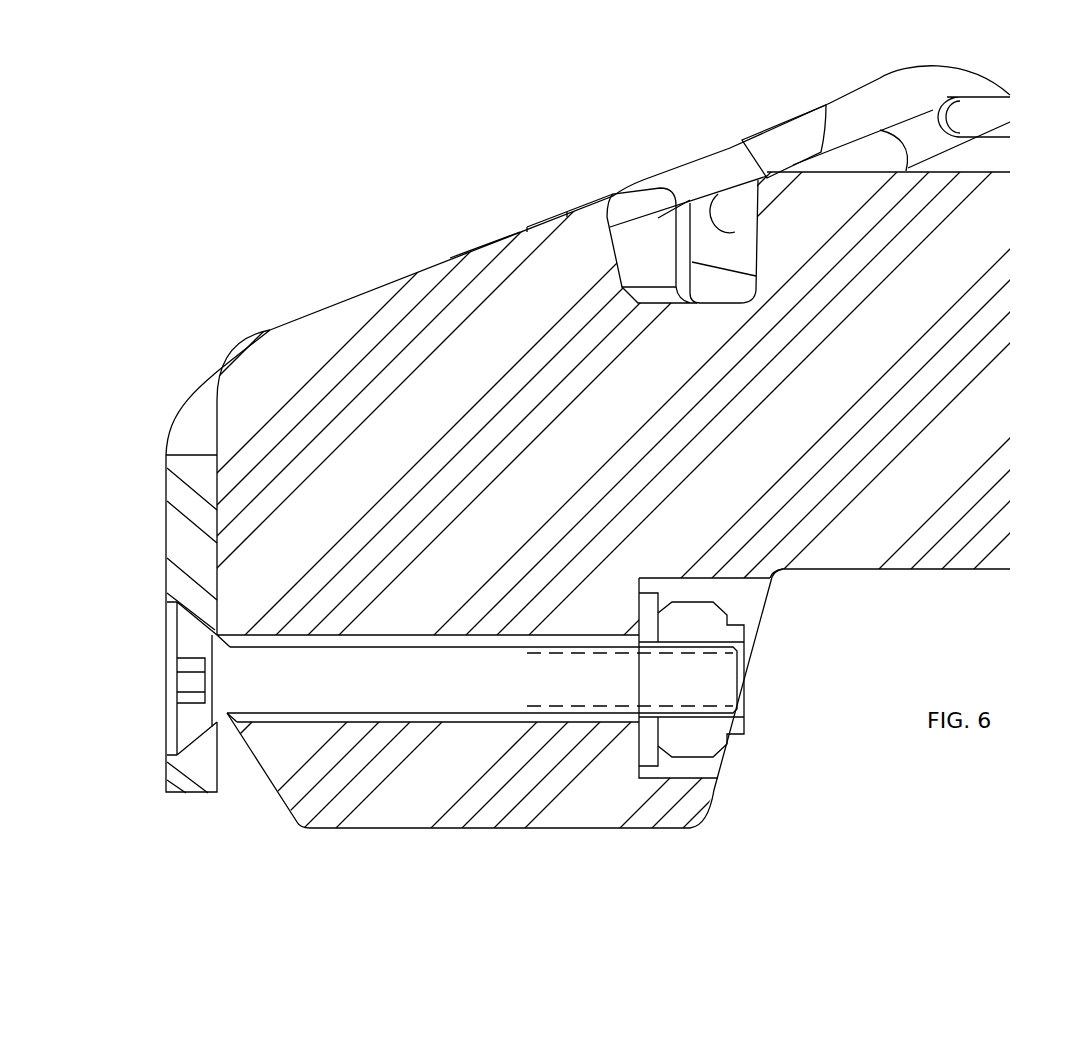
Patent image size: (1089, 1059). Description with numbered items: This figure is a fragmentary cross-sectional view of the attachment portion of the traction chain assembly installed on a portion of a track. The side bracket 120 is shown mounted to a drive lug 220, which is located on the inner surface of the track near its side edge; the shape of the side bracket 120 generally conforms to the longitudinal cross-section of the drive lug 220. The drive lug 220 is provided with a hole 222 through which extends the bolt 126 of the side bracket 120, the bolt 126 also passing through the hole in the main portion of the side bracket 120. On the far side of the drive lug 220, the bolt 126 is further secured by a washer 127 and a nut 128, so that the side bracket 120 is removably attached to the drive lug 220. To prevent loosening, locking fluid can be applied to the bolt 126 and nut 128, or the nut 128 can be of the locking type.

The side bracket 120 is at (178, 548).
The bolt 126 is at (177, 722).
The washer 127 is at (673, 592).
The nut 128 is at (713, 740).
The drive lug 220 is at (700, 793).
The hole 222 is at (297, 717).